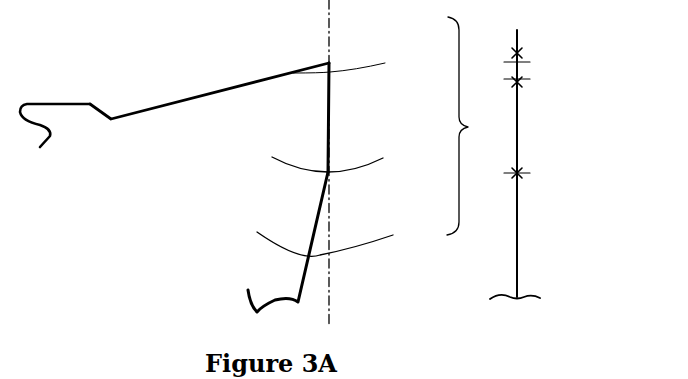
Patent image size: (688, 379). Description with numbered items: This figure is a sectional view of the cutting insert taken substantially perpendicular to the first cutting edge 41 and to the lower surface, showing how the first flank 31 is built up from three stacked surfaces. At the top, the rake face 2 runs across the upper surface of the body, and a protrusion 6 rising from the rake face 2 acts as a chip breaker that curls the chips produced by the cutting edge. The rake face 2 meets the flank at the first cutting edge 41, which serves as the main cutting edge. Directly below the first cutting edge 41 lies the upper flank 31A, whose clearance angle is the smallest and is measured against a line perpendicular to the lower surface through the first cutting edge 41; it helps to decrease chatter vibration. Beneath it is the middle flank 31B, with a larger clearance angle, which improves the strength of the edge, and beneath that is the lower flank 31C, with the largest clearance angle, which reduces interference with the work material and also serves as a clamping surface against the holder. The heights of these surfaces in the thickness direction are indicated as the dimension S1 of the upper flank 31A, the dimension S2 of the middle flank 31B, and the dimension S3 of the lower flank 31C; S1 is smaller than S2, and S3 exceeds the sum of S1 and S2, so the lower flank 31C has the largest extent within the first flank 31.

The protrusion 6 is at (58, 104).
The rake face 2 is at (167, 104).
The first cutting edge 41 is at (330, 63).
The first flank 31 is at (370, 164).
The upper flank 31A is at (331, 63).
The middle flank 31B is at (331, 133).
The lower flank 31C is at (318, 217).
The dimension of the upper flank in the thickness direction S1 is at (519, 70).
The dimension of the middle flank in the thickness direction S2 is at (519, 125).
The dimension of the lower flank in the thickness direction S3 is at (519, 235).